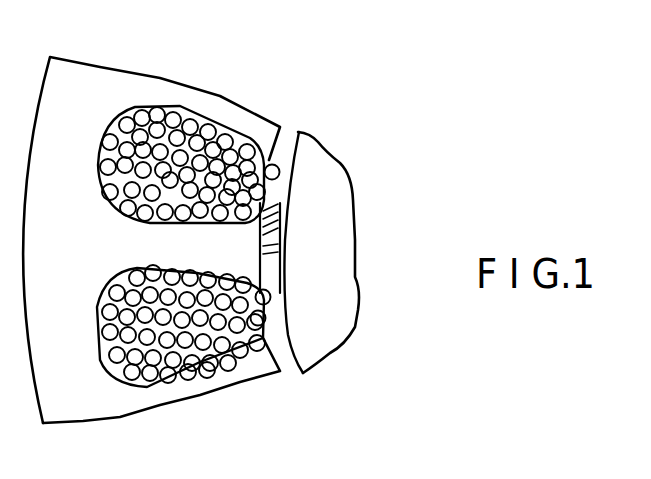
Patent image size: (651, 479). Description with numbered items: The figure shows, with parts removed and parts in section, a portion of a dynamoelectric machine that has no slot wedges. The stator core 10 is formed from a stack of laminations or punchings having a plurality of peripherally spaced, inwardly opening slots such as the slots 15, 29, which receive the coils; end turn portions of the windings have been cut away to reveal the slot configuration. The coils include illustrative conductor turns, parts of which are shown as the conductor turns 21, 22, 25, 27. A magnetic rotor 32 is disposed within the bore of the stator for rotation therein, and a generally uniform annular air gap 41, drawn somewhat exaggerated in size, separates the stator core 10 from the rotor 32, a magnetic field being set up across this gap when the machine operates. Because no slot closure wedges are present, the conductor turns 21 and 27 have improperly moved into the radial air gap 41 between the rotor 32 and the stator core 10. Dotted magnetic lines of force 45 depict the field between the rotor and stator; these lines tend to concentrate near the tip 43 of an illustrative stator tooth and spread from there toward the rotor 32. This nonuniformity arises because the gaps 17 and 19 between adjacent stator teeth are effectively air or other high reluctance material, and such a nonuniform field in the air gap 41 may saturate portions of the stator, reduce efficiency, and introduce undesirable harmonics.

The stator core 10 is at (81, 84).
The slot 15 is at (185, 115).
The gap between adjacent stator teeth 17 is at (262, 185).
The gap between adjacent stator teeth 19 is at (264, 310).
The conductor turn 21 is at (276, 166).
The conductor turn 22 is at (144, 118).
The conductor turn 25 is at (150, 365).
The conductor turn 27 is at (268, 295).
The slot 29 is at (98, 362).
The magnetic rotor 32 is at (318, 165).
The air gap 41 is at (285, 362).
The tip of stator tooth 43 is at (256, 208).
The magnetic lines of force 45 is at (258, 246).